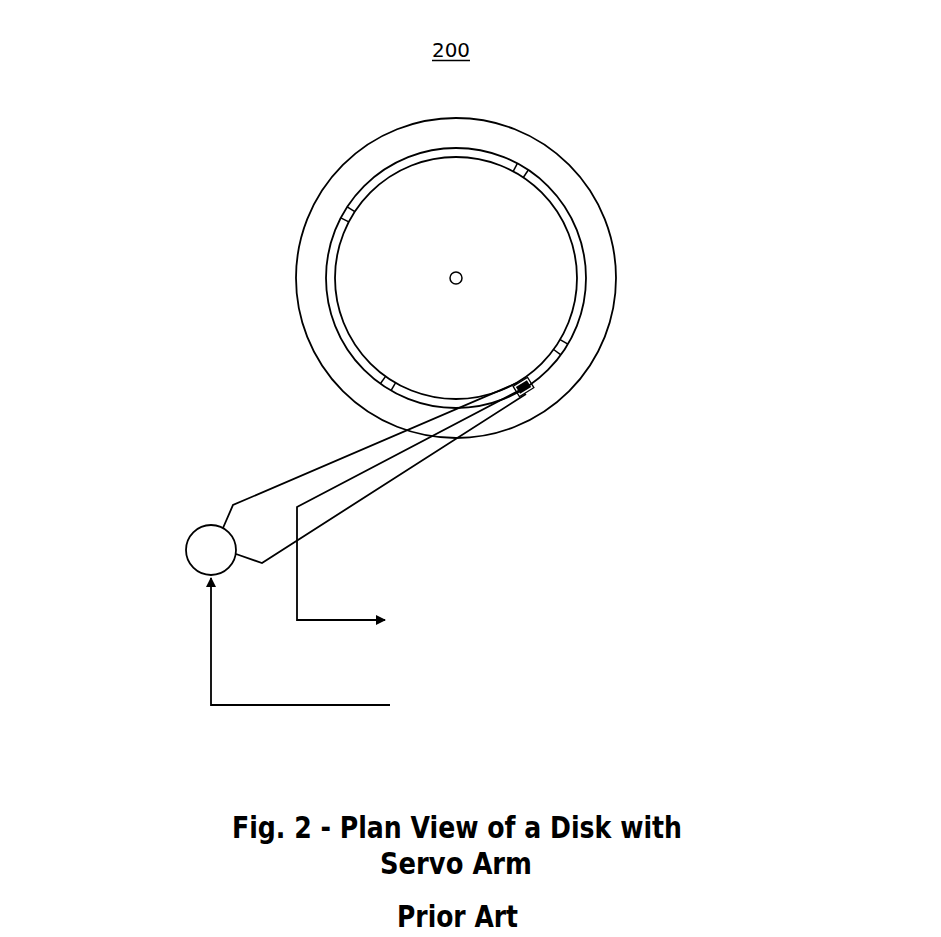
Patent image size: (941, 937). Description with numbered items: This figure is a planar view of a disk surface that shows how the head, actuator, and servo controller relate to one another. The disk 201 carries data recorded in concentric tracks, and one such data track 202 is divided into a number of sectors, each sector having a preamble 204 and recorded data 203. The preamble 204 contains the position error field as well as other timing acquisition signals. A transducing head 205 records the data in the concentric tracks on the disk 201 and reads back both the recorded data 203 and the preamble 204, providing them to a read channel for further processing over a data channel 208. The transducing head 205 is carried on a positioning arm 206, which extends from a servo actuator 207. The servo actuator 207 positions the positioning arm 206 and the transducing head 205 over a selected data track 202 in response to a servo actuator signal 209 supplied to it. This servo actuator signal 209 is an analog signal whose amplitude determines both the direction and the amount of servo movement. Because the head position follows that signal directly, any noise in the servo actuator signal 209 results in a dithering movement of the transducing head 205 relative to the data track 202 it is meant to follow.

The disk 201 is at (562, 163).
The data track 202 is at (552, 185).
The recorded data 203 is at (582, 275).
The preamble 204 is at (565, 345).
The transducing head 205 is at (530, 392).
The positioning arm 206 is at (380, 488).
The servo actuator 207 is at (197, 572).
The data channel 208 is at (408, 510).
The servo actuator signal 209 is at (428, 647).